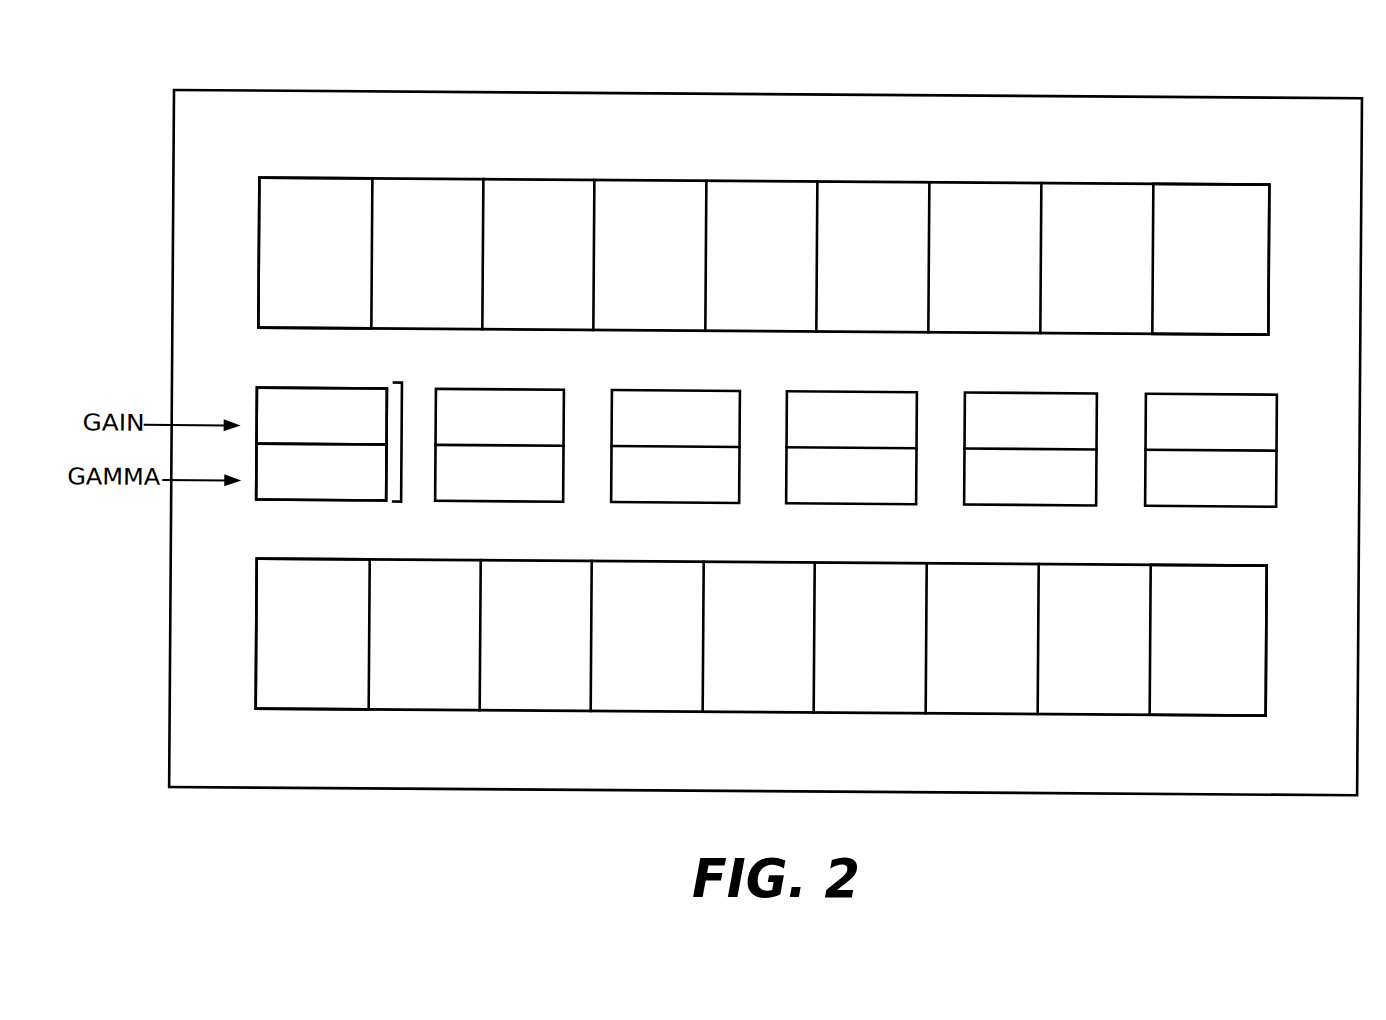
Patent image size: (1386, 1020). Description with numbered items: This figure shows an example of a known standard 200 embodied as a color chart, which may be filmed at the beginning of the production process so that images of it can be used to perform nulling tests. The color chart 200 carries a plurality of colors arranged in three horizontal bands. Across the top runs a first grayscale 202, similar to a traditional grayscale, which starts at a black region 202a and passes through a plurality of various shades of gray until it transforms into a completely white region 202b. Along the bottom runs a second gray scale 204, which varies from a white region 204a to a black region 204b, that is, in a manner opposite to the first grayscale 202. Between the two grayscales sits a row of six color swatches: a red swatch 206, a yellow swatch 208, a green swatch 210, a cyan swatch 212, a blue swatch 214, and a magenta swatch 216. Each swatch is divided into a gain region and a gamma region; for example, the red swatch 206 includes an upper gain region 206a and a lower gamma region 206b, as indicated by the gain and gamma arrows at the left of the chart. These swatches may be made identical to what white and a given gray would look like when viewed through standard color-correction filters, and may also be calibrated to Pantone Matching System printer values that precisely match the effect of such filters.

The known standard 200 is at (1043, 87).
The first grayscale 202 is at (770, 222).
The black region 202a is at (260, 252).
The white region 202b is at (1251, 259).
The second gray scale 204 is at (766, 673).
The white region 204a is at (260, 629).
The black region 204b is at (1250, 640).
The red swatch 206 is at (367, 444).
The gain region 206a is at (319, 386).
The gamma region 206b is at (336, 499).
The yellow swatch 208 is at (501, 499).
The green swatch 210 is at (678, 498).
The cyan swatch 212 is at (855, 499).
The blue swatch 214 is at (1041, 499).
The magenta swatch 216 is at (1223, 499).